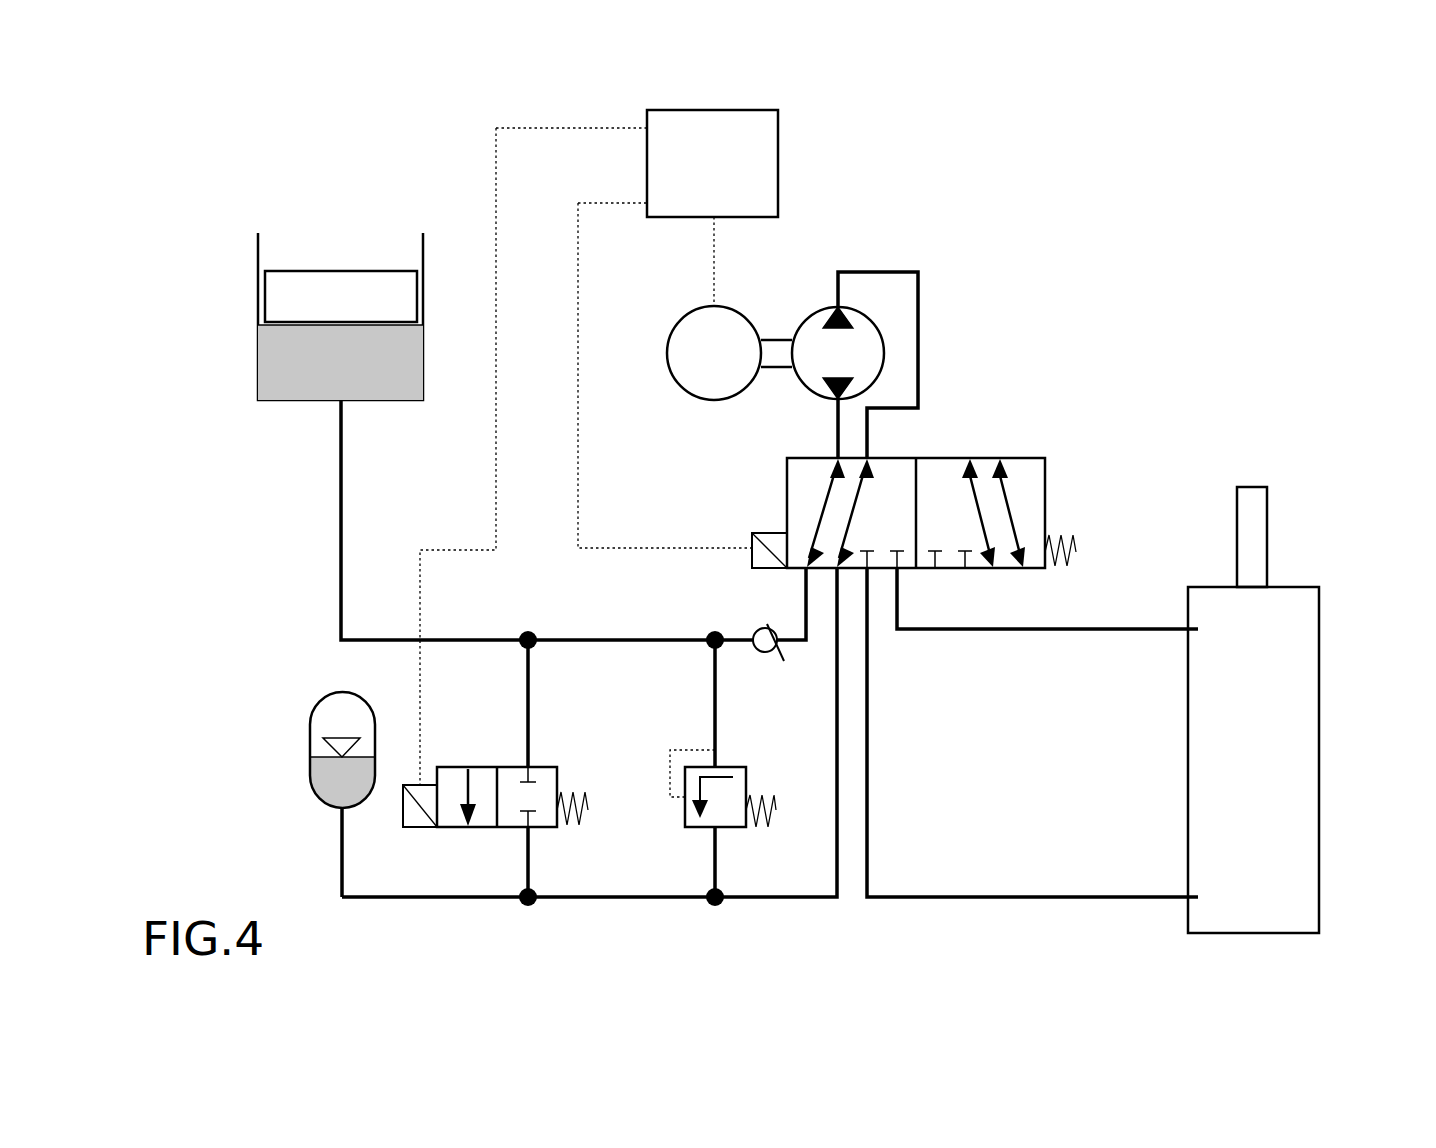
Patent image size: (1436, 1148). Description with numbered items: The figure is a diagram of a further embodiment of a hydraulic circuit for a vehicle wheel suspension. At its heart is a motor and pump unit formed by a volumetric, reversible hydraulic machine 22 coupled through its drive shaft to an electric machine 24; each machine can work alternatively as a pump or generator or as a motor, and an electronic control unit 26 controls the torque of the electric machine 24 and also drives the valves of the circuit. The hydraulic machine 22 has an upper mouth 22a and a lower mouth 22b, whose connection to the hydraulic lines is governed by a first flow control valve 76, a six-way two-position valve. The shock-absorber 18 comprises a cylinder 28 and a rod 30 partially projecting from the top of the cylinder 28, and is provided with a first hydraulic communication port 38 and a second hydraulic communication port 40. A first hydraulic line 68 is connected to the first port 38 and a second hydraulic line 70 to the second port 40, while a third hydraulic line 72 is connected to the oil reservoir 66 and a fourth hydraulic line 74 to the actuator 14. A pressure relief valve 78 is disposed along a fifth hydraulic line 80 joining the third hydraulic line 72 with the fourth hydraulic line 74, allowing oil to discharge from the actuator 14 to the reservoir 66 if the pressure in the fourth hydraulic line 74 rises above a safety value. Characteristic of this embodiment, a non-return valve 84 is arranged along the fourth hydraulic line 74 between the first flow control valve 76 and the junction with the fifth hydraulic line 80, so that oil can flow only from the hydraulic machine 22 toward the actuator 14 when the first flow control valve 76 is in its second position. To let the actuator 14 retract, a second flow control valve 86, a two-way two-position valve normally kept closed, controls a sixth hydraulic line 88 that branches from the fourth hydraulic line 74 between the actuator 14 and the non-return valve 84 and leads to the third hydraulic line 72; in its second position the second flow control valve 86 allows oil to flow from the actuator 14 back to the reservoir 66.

The actuator 14 is at (258, 323).
The shock-absorber 18 is at (1308, 688).
The hydraulic machine 22 is at (838, 314).
The upper mouth of the hydraulic machine 22a is at (845, 322).
The lower mouth of the hydraulic machine 22b is at (833, 400).
The electric machine 24 is at (668, 338).
The electronic control unit 26 is at (678, 110).
The cylinder 28 is at (1300, 758).
The rod 30 is at (1267, 503).
The first hydraulic communication port 38 is at (1188, 629).
The second hydraulic communication port 40 is at (1188, 897).
The oil reservoir 66 is at (310, 715).
The first hydraulic line 68 is at (1036, 629).
The second hydraulic line 70 is at (1040, 897).
The third hydraulic line 72 is at (448, 898).
The fourth hydraulic line 74 is at (472, 640).
The first flow control valve 76 is at (787, 490).
The pressure relief valve 78 is at (735, 827).
The fifth hydraulic line 80 is at (715, 713).
The non-return valve 84 is at (773, 657).
The second flow control valve 86 is at (468, 767).
The sixth hydraulic line 88 is at (528, 690).